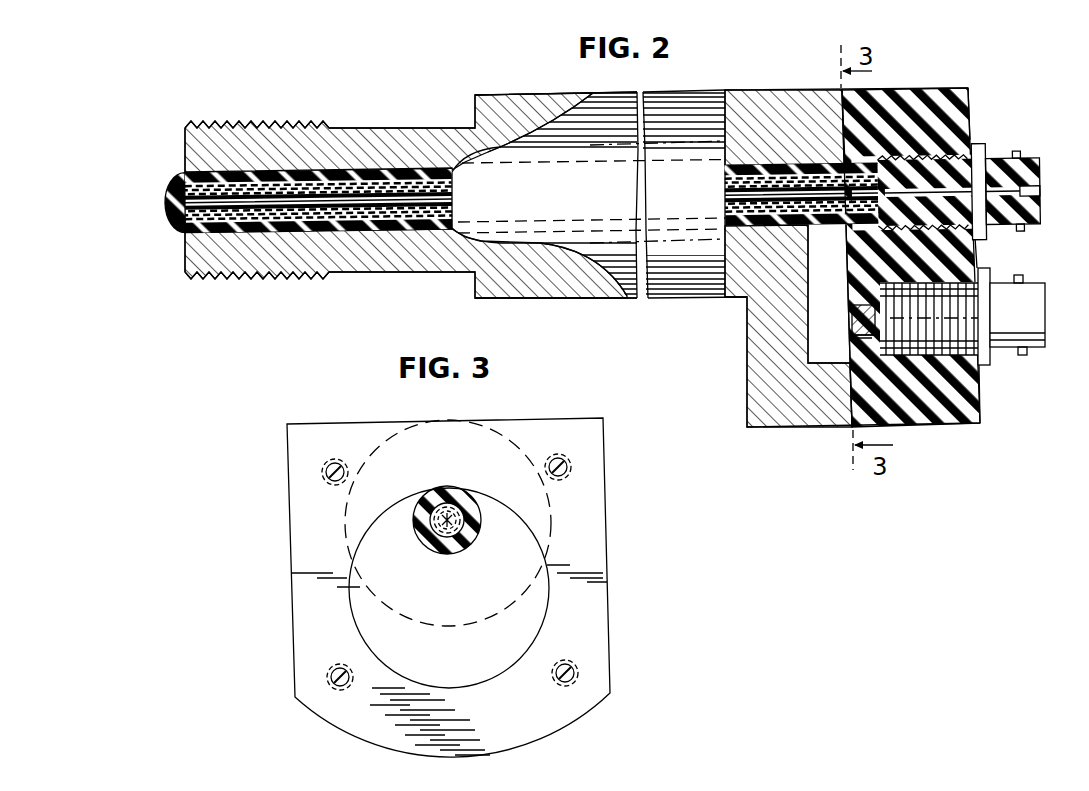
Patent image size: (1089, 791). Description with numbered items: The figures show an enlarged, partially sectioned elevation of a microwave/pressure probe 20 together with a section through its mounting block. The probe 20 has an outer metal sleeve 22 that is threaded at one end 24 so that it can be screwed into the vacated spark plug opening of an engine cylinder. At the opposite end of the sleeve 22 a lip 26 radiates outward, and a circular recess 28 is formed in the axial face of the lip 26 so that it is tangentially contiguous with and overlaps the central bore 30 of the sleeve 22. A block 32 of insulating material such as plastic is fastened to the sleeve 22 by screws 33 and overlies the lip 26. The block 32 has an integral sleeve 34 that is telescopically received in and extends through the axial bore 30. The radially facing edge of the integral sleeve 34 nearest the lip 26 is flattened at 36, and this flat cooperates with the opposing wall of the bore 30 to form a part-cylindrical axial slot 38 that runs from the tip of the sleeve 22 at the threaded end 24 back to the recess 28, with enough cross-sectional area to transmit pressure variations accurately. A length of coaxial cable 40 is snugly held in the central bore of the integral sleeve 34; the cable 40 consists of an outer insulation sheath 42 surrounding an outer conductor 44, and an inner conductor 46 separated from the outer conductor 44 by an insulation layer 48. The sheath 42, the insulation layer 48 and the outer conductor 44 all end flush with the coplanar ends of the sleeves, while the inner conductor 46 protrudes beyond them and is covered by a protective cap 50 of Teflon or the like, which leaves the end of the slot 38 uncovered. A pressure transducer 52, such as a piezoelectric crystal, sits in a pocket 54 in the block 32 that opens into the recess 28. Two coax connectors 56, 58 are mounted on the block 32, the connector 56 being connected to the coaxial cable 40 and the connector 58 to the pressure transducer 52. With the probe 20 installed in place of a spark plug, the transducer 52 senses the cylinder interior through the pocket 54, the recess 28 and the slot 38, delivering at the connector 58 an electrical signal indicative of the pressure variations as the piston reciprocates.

In FIG. 2, the probe 20 is at (482, 91).
In FIG. 3, the probe 20 is at (636, 530).
In FIG. 2, the outer metal sleeve 22 is at (423, 126).
In FIG. 3, the outer metal sleeve 22 is at (286, 620).
In FIG. 2, the threaded end 24 is at (233, 280).
In FIG. 2, the lip 26 is at (768, 403).
In FIG. 3, the lip 26 is at (605, 620).
In FIG. 2, the circular recess 28 is at (817, 323).
In FIG. 3, the circular recess 28 is at (508, 664).
In FIG. 2, the central bore 30 is at (225, 172).
In FIG. 3, the central bore 30 is at (425, 500).
In FIG. 2, the block 32 is at (930, 90).
In FIG. 3, the screws 33 is at (563, 456).
In FIG. 2, the integral sleeve 34 is at (282, 174).
In FIG. 3, the integral sleeve 34 is at (468, 515).
In FIG. 2, the flattened edge 36 is at (190, 242).
In FIG. 3, the flattened edge 36 is at (440, 550).
In FIG. 2, the part-cylindrical axial slot 38 is at (203, 239).
In FIG. 3, the part-cylindrical axial slot 38 is at (452, 550).
In FIG. 2, the coaxial cable 40 is at (210, 180).
In FIG. 3, the coaxial cable 40 is at (447, 490).
In FIG. 2, the outer insulation sheath 42 is at (280, 210).
In FIG. 2, the outer conductor 44 is at (348, 216).
In FIG. 2, the inner conductor 46 is at (167, 209).
In FIG. 3, the inner conductor 46 is at (463, 528).
In FIG. 2, the insulation layer 48 is at (395, 214).
In FIG. 2, the protective cap 50 is at (182, 185).
In FIG. 2, the pressure transducer 52 is at (850, 320).
In FIG. 2, the pocket 54 is at (850, 326).
In FIG. 2, the coax connector 56 is at (983, 152).
In FIG. 2, the coax connector 58 is at (987, 367).